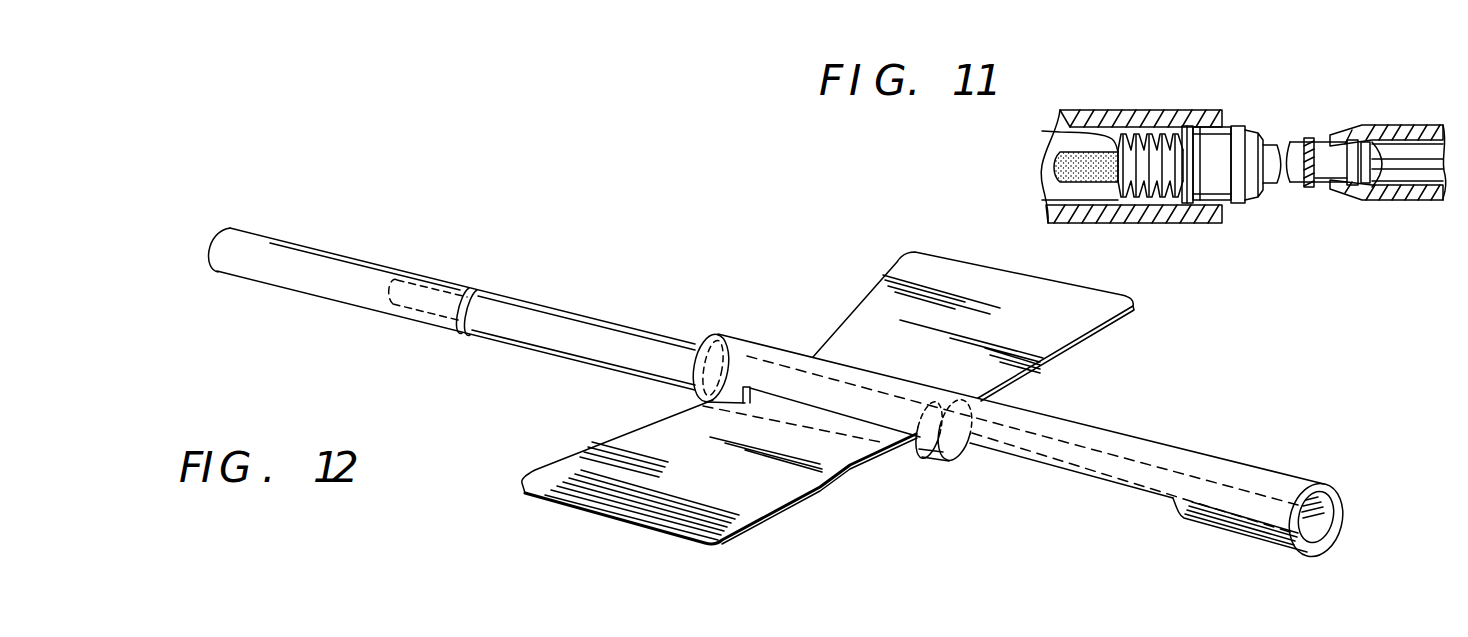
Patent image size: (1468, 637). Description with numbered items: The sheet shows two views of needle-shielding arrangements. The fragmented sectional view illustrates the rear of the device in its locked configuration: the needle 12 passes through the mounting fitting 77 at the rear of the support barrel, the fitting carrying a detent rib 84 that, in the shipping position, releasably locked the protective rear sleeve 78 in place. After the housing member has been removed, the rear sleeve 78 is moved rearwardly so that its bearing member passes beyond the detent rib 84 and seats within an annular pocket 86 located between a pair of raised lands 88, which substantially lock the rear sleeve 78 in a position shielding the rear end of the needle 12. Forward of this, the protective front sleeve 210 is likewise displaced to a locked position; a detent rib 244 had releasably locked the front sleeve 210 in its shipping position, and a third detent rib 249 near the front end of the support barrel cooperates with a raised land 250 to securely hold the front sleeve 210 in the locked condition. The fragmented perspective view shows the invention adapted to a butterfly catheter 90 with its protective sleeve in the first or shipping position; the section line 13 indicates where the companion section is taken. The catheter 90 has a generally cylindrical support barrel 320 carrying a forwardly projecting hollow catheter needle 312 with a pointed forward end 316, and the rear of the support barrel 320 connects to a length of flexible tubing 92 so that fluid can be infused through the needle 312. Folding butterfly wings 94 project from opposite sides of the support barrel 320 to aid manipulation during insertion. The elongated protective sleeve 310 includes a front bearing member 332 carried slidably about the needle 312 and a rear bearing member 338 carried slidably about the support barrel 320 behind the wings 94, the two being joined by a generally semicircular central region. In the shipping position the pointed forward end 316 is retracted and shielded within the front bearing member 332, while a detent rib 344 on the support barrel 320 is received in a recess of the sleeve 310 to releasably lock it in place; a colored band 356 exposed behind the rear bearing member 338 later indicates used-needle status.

In FIG. 11, the needle 12 is at (1413, 127).
In FIG. 11, the mounting fitting 77 is at (1060, 132).
In FIG. 11, the protective rear sleeve 78 is at (1120, 108).
In FIG. 11, the detent rib 84 is at (1240, 126).
In FIG. 11, the annular pocket 86 is at (1208, 158).
In FIG. 11, the raised lands 88 is at (1211, 204).
In FIG. 11, the protective front sleeve 210 is at (1392, 125).
In FIG. 11, the detent rib 244 is at (1310, 138).
In FIG. 11, the third detent rib 249 is at (1343, 168).
In FIG. 11, the raised land 250 is at (1378, 176).
In FIG. 12, the section line 13- 13 is at (210, 187).
In FIG. 12, the butterfly catheter 90 is at (1122, 377).
In FIG. 12, the flexible tubing 92 is at (328, 258).
In FIG. 12, the butterfly wings 94 is at (920, 275).
In FIG. 12, the protective sleeve 310 is at (1163, 455).
In FIG. 12, the catheter needle 312 is at (1137, 482).
In FIG. 12, the pointed forward end 316 is at (1309, 514).
In FIG. 12, the support barrel 320 is at (825, 427).
In FIG. 12, the front bearing member 332 is at (1223, 533).
In FIG. 12, the rear bearing member 338 is at (736, 375).
In FIG. 12, the detent rib 344 is at (922, 460).
In FIG. 12, the colored band 356 is at (690, 362).